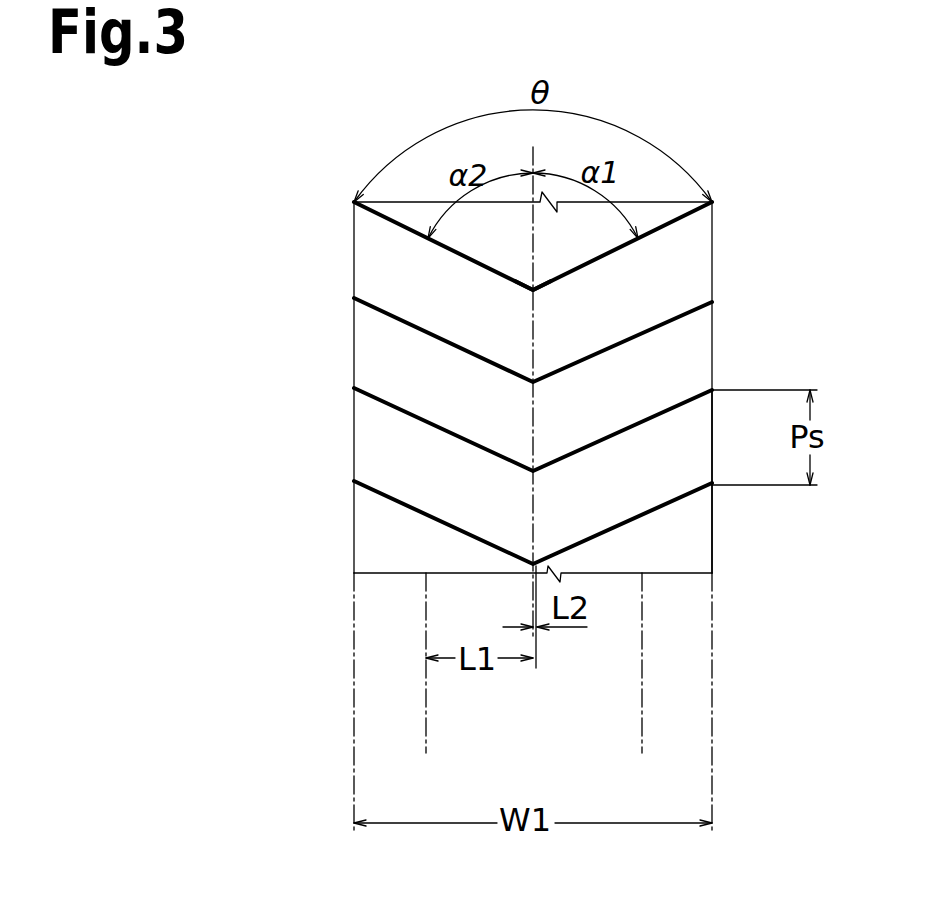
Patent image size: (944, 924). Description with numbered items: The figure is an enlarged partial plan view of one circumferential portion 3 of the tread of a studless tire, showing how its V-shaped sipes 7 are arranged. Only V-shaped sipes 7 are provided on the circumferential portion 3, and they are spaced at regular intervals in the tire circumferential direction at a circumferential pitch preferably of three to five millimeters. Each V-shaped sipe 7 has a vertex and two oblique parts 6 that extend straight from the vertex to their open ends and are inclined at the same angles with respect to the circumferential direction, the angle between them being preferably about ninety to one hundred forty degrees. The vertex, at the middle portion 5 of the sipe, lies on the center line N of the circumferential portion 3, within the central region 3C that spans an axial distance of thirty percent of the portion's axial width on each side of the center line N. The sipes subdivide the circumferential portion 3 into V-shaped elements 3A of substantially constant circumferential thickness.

The circumferential portion 3 is at (712, 145).
The middle portion 5 is at (533, 290).
The oblique parts 6 is at (400, 238).
The V-shaped sipe 7 is at (683, 405).
The V-shaped elements 3A is at (641, 480).
The central region 3C is at (632, 740).
The center line N is at (536, 666).